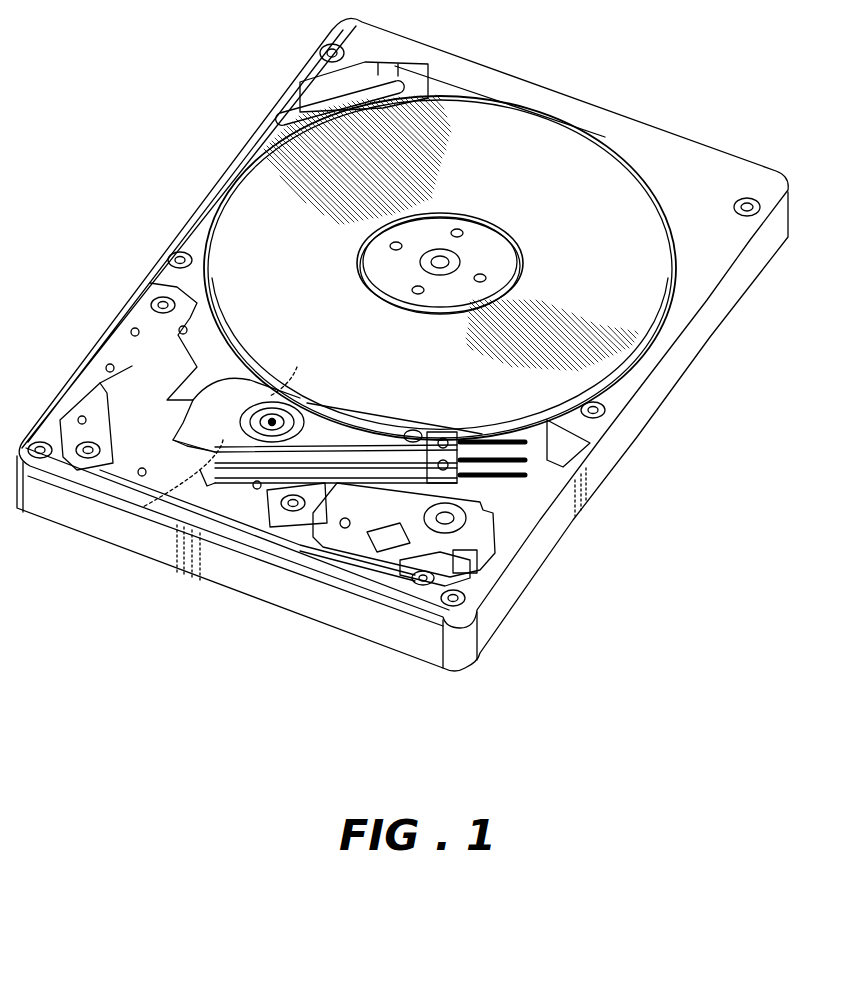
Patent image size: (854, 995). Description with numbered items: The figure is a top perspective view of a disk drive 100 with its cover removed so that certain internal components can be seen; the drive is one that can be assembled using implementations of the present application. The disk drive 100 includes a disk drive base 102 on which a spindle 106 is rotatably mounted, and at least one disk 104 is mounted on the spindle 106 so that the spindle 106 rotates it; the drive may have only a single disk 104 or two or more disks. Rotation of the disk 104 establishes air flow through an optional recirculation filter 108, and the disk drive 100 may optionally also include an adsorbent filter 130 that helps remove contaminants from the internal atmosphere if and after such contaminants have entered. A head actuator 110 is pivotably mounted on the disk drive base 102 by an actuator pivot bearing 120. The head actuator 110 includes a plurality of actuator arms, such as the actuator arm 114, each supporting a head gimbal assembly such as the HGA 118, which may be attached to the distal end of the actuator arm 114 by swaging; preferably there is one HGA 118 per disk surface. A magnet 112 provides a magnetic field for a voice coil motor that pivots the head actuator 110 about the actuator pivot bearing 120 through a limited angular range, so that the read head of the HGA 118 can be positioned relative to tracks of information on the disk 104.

The disk drive 100 is at (597, 79).
The disk drive base 102 is at (700, 312).
The disk 104 is at (303, 281).
The spindle 106 is at (442, 232).
The recirculation filter 108 is at (290, 80).
The head actuator 110 is at (143, 507).
The magnet 112 is at (127, 350).
The actuator arm 114 is at (345, 420).
The head gimbal assembly 118 is at (483, 437).
The actuator pivot bearing 120 is at (285, 383).
The adsorbent filter 130 is at (507, 563).